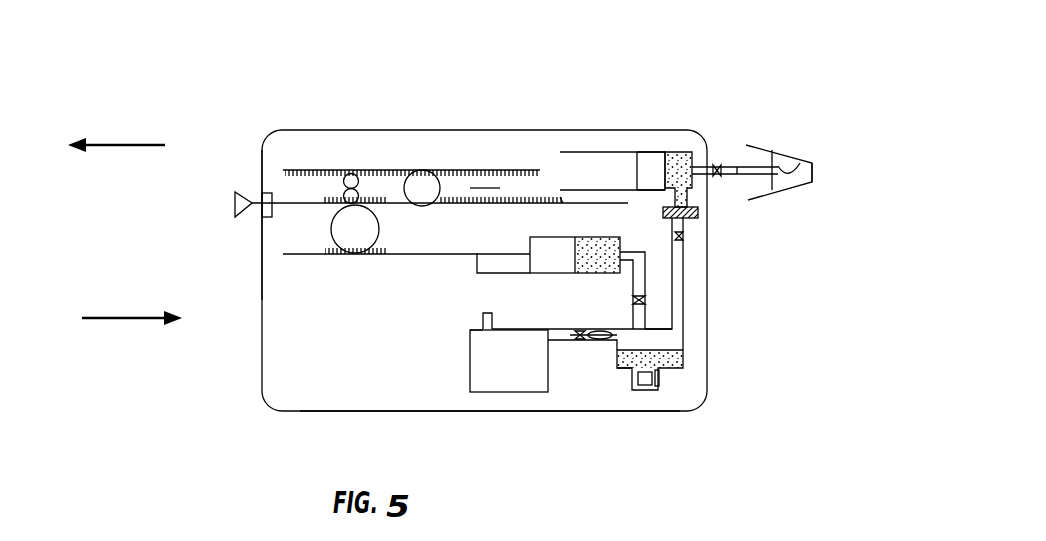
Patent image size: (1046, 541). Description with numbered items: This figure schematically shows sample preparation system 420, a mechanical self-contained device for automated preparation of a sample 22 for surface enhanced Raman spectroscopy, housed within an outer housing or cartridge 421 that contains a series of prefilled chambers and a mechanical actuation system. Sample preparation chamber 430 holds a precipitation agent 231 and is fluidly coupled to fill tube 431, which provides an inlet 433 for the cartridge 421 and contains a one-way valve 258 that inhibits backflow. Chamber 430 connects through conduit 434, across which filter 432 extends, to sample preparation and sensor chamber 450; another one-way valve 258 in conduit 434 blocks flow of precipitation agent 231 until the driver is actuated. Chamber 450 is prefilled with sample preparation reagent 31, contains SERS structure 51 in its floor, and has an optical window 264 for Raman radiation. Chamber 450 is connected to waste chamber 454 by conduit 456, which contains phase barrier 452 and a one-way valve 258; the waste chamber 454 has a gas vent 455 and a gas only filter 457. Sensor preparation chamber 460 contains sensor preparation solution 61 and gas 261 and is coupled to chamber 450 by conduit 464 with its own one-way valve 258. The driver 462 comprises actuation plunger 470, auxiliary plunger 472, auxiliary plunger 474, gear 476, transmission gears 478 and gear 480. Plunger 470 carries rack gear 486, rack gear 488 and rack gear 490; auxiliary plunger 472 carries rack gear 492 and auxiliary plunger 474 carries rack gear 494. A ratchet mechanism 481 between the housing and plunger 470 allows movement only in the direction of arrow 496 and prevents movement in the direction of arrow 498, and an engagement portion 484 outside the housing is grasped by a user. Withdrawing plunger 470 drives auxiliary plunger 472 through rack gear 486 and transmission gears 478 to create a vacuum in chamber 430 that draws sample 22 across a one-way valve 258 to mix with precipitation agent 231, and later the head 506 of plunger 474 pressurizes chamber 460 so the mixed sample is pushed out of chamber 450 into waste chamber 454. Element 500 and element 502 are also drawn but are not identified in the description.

The sample preparation system 420 is at (253, 103).
The driver 462 is at (326, 153).
The outer housing or cartridge 421 is at (663, 411).
The arrow 496 is at (118, 143).
The arrow 498 is at (122, 322).
The transmission gears 478 is at (300, 170).
The rack gear 486 is at (395, 203).
The rack gear 488 is at (462, 207).
The rack gear 490 is at (545, 203).
The auxiliary plunger 474 is at (307, 256).
The rack gear 494 is at (337, 254).
The ratchet mechanism 481 is at (344, 196).
The gear 480 is at (333, 230).
The gear 476 is at (432, 188).
The rack gear 492 is at (474, 190).
The actuation plunger 470 is at (233, 204).
The engagement portion 484 is at (242, 217).
The auxiliary plunger 472 is at (510, 170).
The plunger 500 is at (645, 152).
The sample preparation chamber 430 is at (677, 152).
The precipitation agent 231 is at (686, 152).
The inlet 433 is at (698, 213).
The outlet channel 502 is at (694, 183).
The fill tube 431 is at (738, 167).
The filter 432 is at (802, 162).
The sample 22 is at (798, 178).
The one-way valve 258 is at (717, 165).
The conduit 434 is at (684, 258).
The conduit 464 is at (660, 280).
The gas 261 is at (548, 248).
The sensor preparation solution 61 is at (596, 272).
The sensor preparation chamber 460 is at (597, 275).
The head 506 is at (525, 262).
The conduit 456 is at (560, 330).
The gas vent 455 is at (483, 316).
The gas only filter 457 is at (480, 322).
The waste chamber 454 is at (470, 365).
The phase barrier 452 is at (600, 342).
The sample preparation and sensor chamber 450 is at (684, 356).
The optical window 264 is at (660, 378).
The SERS structure 51 is at (658, 390).
The sample preparation reagent 31 is at (632, 363).